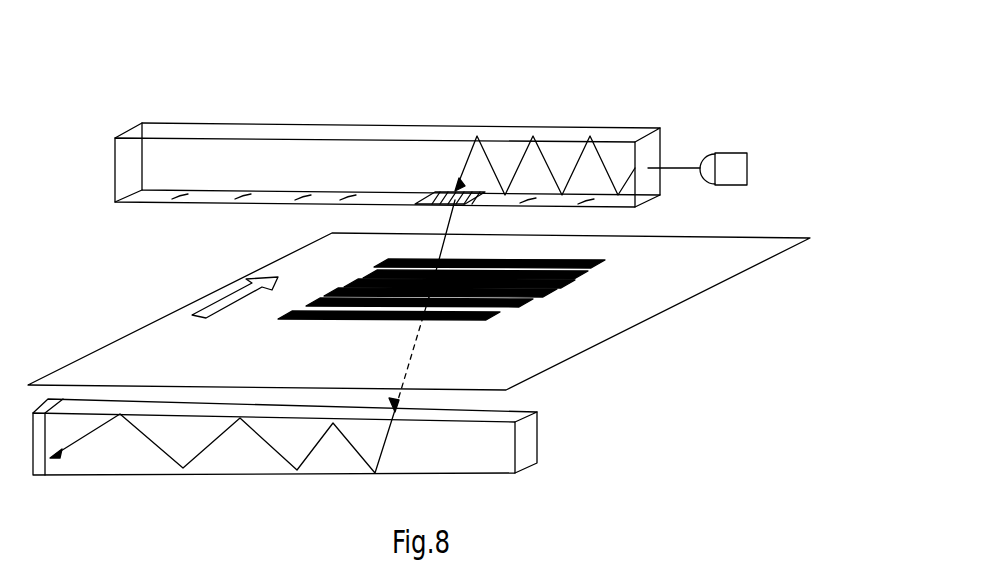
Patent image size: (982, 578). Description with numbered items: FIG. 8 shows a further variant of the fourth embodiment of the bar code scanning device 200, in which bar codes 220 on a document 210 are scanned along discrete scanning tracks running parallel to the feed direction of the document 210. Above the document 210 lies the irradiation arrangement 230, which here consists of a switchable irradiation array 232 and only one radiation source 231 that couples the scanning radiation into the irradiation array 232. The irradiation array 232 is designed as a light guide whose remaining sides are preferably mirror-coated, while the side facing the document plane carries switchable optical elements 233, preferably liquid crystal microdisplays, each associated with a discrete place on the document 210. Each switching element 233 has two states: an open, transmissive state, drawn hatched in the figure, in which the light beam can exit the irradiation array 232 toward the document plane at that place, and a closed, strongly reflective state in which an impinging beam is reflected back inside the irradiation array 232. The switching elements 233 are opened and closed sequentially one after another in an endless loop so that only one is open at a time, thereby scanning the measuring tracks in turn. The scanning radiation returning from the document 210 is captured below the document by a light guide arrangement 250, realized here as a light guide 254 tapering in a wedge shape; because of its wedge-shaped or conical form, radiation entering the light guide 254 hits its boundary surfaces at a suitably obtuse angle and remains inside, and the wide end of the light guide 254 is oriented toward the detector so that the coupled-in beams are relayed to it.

The display device 200 is at (156, 270).
The document 210 is at (113, 356).
The bar codes 220 is at (500, 320).
The irradiation arrangement 230 is at (530, 88).
The radiation source 231 is at (728, 153).
The switchable irradiation array 232 is at (238, 163).
The switchable optical elements 233 is at (425, 193).
The light guide arrangement 250 is at (660, 440).
The light guide tapering in a wedge shape 254 is at (530, 443).